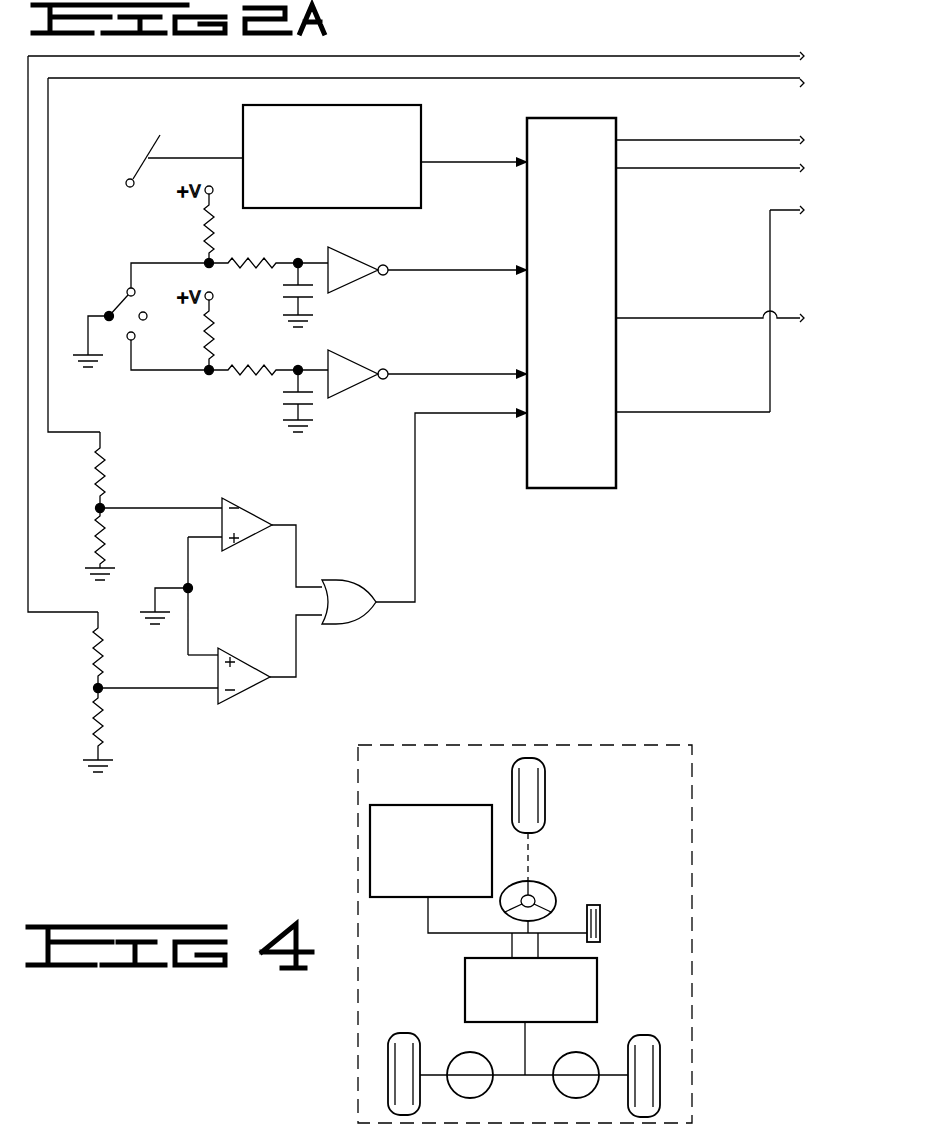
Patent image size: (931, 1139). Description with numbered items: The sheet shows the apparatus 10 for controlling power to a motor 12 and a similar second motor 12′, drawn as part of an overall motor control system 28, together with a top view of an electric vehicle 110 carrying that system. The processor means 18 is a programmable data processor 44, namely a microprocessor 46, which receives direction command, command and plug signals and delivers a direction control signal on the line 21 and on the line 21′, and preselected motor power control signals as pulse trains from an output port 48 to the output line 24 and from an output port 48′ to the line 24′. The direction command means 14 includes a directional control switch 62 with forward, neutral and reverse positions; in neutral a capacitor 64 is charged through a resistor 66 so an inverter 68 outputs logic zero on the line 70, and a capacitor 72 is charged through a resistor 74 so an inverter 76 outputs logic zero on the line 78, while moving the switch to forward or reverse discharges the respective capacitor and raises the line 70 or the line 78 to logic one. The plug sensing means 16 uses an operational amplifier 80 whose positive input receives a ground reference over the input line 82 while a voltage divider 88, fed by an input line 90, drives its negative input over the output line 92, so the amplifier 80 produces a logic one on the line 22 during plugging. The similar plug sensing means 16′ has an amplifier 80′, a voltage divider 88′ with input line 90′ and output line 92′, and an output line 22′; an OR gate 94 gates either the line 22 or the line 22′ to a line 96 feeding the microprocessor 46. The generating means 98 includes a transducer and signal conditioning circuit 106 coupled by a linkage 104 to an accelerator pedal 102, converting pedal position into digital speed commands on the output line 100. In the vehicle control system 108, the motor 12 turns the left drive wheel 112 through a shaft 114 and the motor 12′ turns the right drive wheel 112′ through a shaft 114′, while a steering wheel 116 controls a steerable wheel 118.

In FIG. 2A, the generating means 98 is at (302, 82).
In FIG. 2A, the accelerator pedal 102 is at (131, 156).
In FIG. 4, the accelerator pedal 102 is at (601, 915).
In FIG. 2A, the linkage 104 is at (190, 158).
In FIG. 2A, the transducer and signal conditioning circuit 106 is at (422, 118).
In FIG. 2A, the output line 100 is at (432, 160).
In FIG. 2A, the microprocessor 46 is at (580, 357).
In FIG. 2A, the programmable data processor 44 is at (630, 468).
In FIG. 2A, the processor means 18 is at (556, 510).
In FIG. 2A, the apparatus 10 is at (521, 600).
In FIG. 2A, the motor control system 28 is at (600, 638).
In FIG. 4, the motor control system 28 is at (598, 985).
In FIG. 2A, the line 21′ is at (655, 140).
In FIG. 2A, the line 21 is at (693, 168).
In FIG. 2A, the output port 48 is at (618, 318).
In FIG. 2A, the output line 24 is at (722, 318).
In FIG. 2A, the output port 48′ is at (618, 412).
In FIG. 2A, the line 24′ is at (660, 412).
In FIG. 2A, the directional control switch 62 is at (108, 276).
In FIG. 4, the directional control switch 62 is at (445, 805).
In FIG. 2A, the direction command means 14 is at (128, 390).
In FIG. 2A, the resistor 66 is at (252, 260).
In FIG. 2A, the resistor 74 is at (255, 378).
In FIG. 2A, the capacitor 64 is at (292, 292).
In FIG. 2A, the capacitor 72 is at (292, 410).
In FIG. 2A, the inverter 68 is at (358, 253).
In FIG. 2A, the line 70 is at (428, 270).
In FIG. 2A, the inverter 76 is at (350, 360).
In FIG. 2A, the line 78 is at (430, 375).
In FIG. 2A, the input line 90 is at (63, 434).
In FIG. 2A, the voltage divider 88 is at (94, 512).
In FIG. 2A, the input line 90′ is at (66, 608).
In FIG. 2A, the voltage divider 88′ is at (92, 696).
In FIG. 2A, the output line 92 is at (186, 505).
In FIG. 2A, the plug sensing means 16 is at (276, 500).
In FIG. 2A, the operational amplifier 80 is at (240, 550).
In FIG. 2A, the input line 82 is at (194, 588).
In FIG. 2A, the line 22 is at (300, 535).
In FIG. 2A, the output line 92′ is at (176, 694).
In FIG. 2A, the plug sensing means 16′ is at (236, 722).
In FIG. 2A, the amplifier 80′ is at (246, 694).
In FIG. 2A, the output line 22′ is at (298, 645).
In FIG. 2A, the OR gate 94 is at (350, 620).
In FIG. 2A, the line 96 is at (417, 532).
In FIG. 4, the electric vehicle 110 is at (698, 832).
In FIG. 4, the steerable wheel 118 is at (546, 785).
In FIG. 4, the vehicle control system 108 is at (600, 820).
In FIG. 4, the steering wheel 116 is at (554, 892).
In FIG. 4, the second motor 12′ is at (458, 1090).
In FIG. 4, the motor 12 is at (556, 1088).
In FIG. 4, the shaft 114′ is at (432, 1073).
In FIG. 4, the shaft 114 is at (612, 1073).
In FIG. 4, the right drive wheel 112′ is at (388, 1070).
In FIG. 4, the left drive wheel 112 is at (660, 1062).